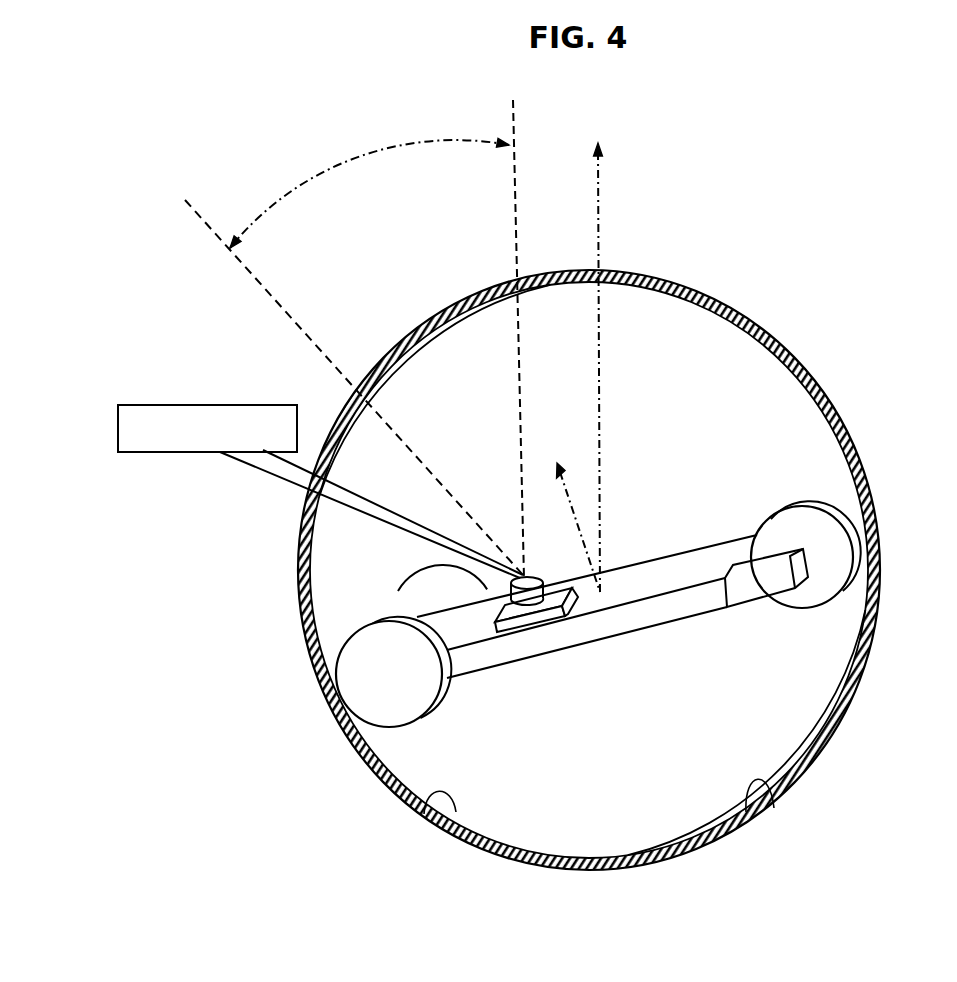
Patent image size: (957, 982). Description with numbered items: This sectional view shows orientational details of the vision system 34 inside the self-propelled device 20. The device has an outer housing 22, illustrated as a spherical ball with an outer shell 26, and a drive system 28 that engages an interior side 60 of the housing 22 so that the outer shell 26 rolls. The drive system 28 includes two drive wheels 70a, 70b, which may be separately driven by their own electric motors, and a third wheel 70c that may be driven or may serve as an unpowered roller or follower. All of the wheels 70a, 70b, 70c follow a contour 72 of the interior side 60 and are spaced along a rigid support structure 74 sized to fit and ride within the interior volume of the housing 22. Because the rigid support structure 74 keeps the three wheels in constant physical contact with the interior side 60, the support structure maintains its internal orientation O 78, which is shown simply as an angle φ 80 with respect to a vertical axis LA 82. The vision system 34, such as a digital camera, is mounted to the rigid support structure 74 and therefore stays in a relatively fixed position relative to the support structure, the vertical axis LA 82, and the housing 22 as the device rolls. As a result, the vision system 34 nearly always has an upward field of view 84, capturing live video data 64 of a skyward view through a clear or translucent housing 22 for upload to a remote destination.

The self-propelled device 20 is at (802, 366).
The housing 22 is at (836, 414).
The outer shell 26 is at (862, 678).
The drive system 28 is at (345, 633).
The vision system 34 is at (540, 630).
The interior side 60 is at (452, 792).
The live video data 64 is at (118, 421).
The drive wheel 70a is at (425, 716).
The drive wheel 70b is at (394, 598).
The third wheel 70c is at (783, 507).
The contour 72 is at (754, 790).
The rigid support structure 74 is at (722, 612).
The internal orientation O 78 is at (555, 443).
The angle φ 80 is at (594, 514).
The vertical axis LA 82 is at (640, 143).
The upward field of view 84 is at (337, 165).